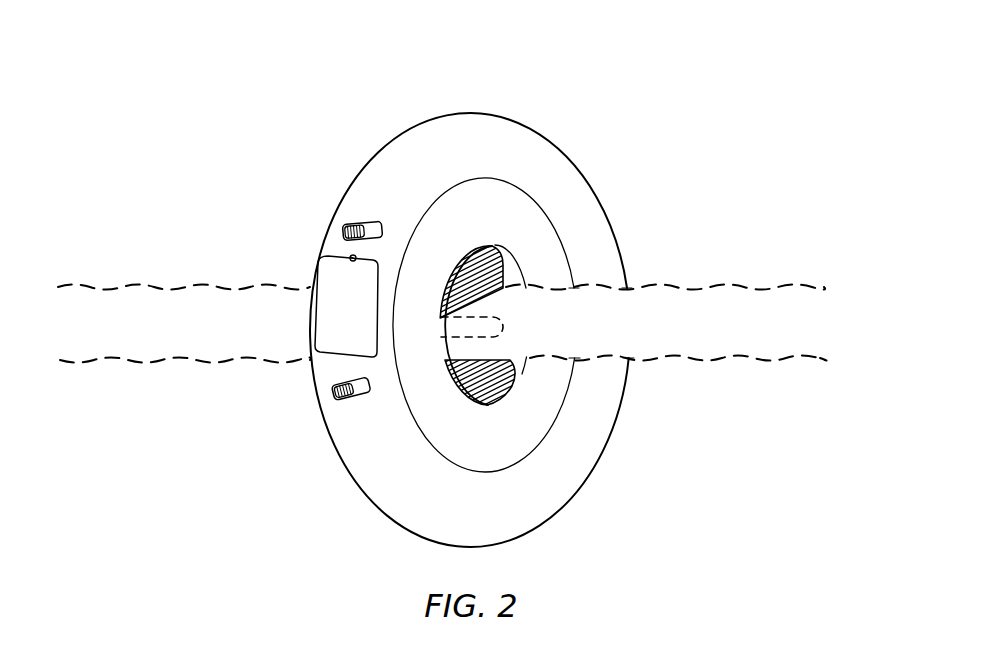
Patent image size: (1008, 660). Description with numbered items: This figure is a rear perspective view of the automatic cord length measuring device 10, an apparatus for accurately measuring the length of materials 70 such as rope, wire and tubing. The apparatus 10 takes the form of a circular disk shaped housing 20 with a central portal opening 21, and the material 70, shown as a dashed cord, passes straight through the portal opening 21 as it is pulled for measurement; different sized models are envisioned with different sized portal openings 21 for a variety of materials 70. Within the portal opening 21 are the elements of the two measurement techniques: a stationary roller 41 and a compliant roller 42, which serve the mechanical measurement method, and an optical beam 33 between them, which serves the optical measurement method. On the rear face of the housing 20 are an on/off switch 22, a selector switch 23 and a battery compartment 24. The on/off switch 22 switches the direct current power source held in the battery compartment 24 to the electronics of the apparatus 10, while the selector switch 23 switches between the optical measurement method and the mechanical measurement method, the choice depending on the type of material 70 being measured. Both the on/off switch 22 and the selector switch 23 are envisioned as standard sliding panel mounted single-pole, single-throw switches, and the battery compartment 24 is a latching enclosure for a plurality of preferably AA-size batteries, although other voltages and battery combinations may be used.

The automatic cord length measuring device 10 is at (187, 128).
The housing 20 is at (604, 211).
The portal opening 21 is at (490, 247).
The on/off switch 22 is at (343, 228).
The selector switch 23 is at (333, 393).
The battery compartment 24 is at (328, 342).
The optical beam 33 is at (478, 328).
The stationary roller 41 is at (475, 273).
The compliant roller 42 is at (488, 383).
The material 70 is at (162, 300).